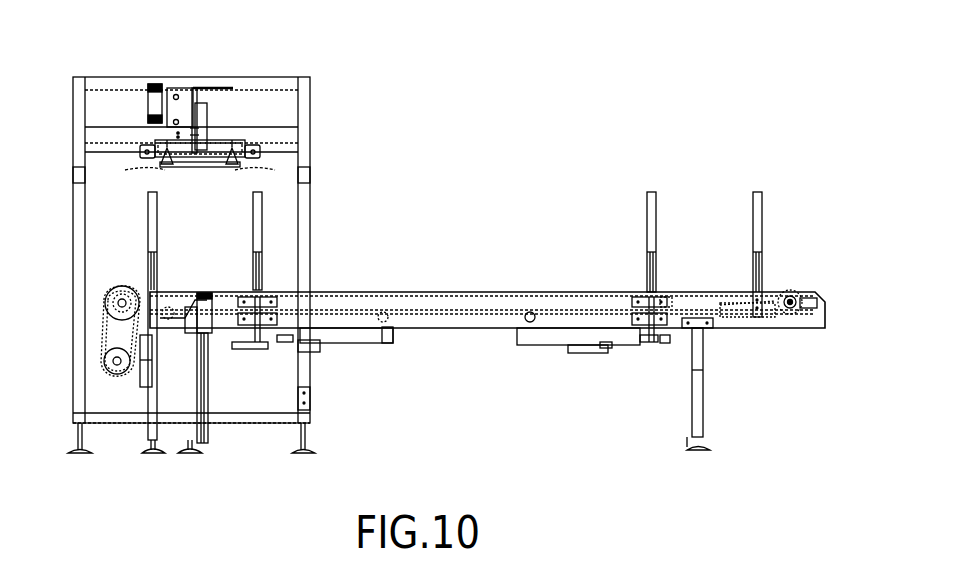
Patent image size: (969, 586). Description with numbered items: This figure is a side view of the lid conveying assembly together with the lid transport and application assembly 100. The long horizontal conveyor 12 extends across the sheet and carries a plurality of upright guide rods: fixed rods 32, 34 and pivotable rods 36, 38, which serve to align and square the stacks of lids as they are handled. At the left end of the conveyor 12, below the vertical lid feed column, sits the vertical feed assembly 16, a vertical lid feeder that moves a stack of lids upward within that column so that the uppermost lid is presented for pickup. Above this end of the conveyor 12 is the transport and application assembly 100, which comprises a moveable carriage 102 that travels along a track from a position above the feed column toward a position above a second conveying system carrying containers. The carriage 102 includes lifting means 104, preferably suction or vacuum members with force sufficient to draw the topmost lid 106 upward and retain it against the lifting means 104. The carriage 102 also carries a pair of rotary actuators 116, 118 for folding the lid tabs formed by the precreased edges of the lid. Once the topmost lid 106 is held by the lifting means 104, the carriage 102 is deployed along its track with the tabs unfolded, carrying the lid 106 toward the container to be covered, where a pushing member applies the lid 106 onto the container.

The conveyor 12 is at (436, 328).
The vertical feed assembly 16 is at (212, 404).
The fixed rod 32 is at (754, 215).
The fixed rod 34 is at (148, 268).
The pivotable rod 36 is at (647, 213).
The pivotable rod 38 is at (262, 268).
The transport and application assembly 100 is at (196, 117).
The moveable carriage 102 is at (178, 88).
The lifting means 104 is at (238, 165).
The topmost lid 106 is at (221, 168).
The rotary actuator 116 is at (262, 152).
The rotary actuator 118 is at (140, 152).